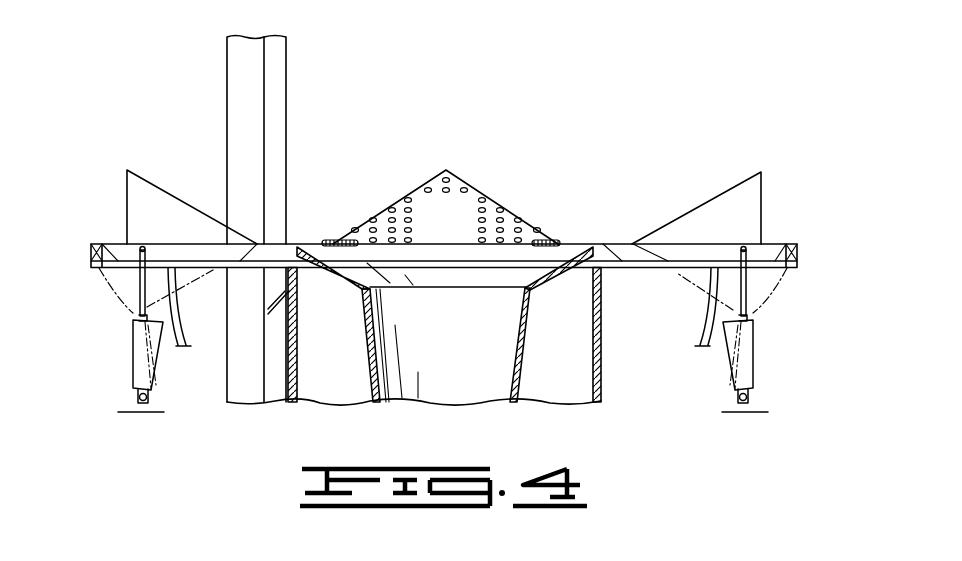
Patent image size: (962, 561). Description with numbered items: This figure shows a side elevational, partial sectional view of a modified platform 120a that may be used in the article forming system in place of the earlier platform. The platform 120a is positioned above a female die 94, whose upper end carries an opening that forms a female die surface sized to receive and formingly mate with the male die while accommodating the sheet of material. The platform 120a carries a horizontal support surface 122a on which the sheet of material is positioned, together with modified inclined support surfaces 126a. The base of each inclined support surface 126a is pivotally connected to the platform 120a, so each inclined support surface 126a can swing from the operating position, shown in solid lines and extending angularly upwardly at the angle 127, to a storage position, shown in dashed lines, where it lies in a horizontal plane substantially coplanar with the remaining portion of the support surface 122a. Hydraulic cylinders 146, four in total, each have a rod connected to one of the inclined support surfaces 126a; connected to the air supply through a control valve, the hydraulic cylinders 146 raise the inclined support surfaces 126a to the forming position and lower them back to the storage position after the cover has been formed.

The female die 94 is at (520, 365).
The modified platform 120a is at (540, 206).
The support surface 122a is at (303, 238).
The inclined support surface 126a is at (170, 188).
The angle 127 is at (715, 204).
The hydraulic cylinder 146 is at (133, 337).